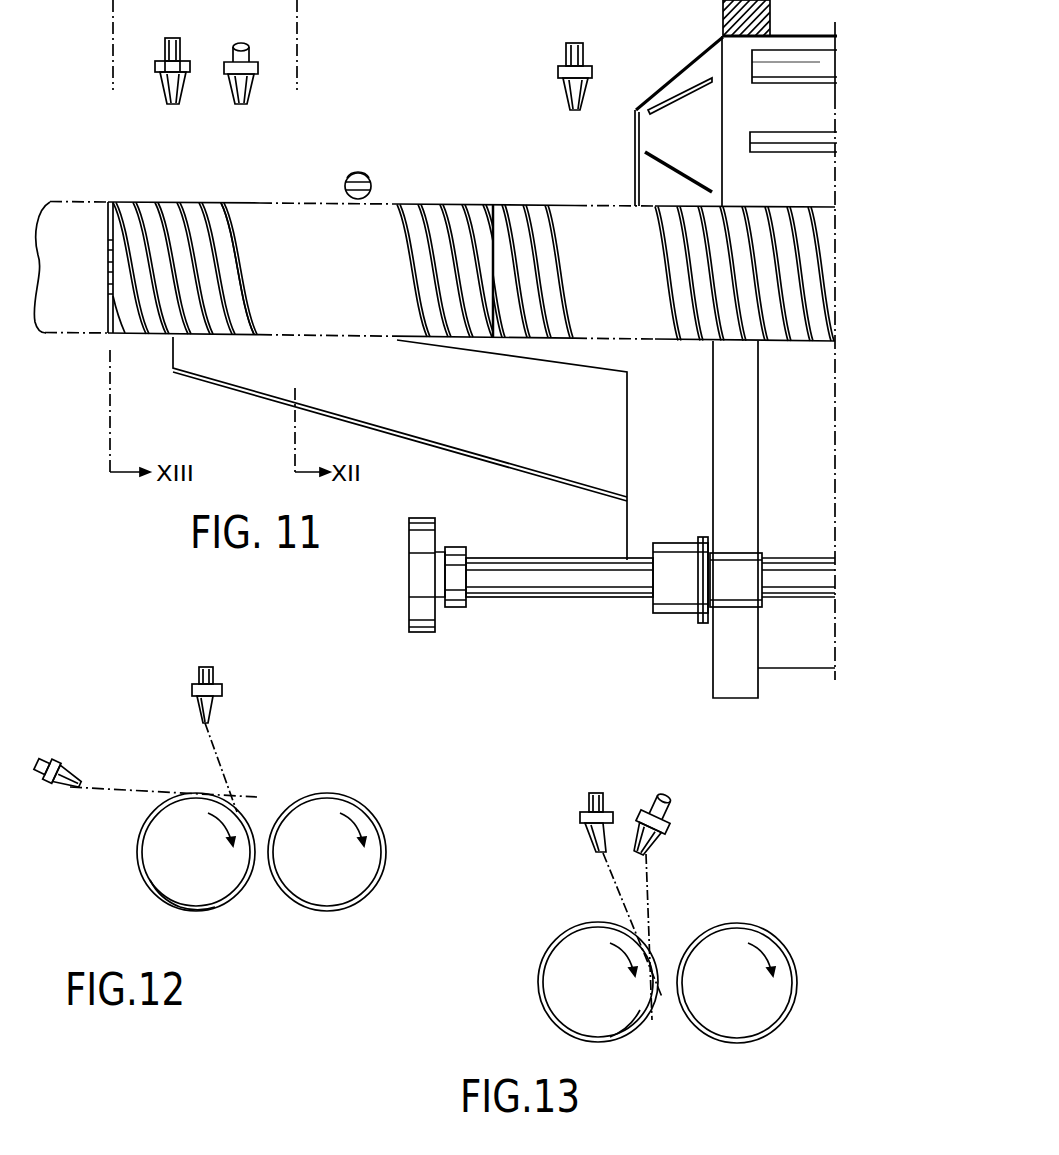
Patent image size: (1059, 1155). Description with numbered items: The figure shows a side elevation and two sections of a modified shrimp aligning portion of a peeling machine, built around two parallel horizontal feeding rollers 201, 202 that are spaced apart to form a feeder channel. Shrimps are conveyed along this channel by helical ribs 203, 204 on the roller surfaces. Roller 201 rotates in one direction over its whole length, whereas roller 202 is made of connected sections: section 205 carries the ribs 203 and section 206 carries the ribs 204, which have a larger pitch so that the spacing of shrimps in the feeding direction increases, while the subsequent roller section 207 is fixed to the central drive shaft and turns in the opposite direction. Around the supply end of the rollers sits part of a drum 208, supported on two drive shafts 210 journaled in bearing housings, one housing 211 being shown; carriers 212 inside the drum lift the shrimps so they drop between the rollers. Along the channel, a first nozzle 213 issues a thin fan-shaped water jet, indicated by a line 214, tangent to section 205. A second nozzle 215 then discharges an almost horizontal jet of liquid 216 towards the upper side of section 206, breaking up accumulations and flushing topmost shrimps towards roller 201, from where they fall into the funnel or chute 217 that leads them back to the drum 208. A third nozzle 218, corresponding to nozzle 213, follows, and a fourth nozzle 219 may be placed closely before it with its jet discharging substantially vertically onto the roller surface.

In FIG. 12, the feeding roller 201 is at (383, 798).
In FIG. 13, the feeding roller 201 is at (772, 913).
In FIG. 11, the feeding roller 202 is at (392, 360).
In FIG. 12, the feeding roller 202 is at (128, 878).
In FIG. 13, the feeding roller 202 is at (528, 1009).
In FIG. 11, the helical ribs 203 is at (527, 212).
In FIG. 11, the helical ribs 204 is at (443, 211).
In FIG. 12, the helical ribs 204 is at (242, 888).
In FIG. 13, the helical ribs 204 is at (569, 935).
In FIG. 11, the roller section 205 is at (611, 340).
In FIG. 12, the roller section 205 is at (184, 924).
In FIG. 11, the roller section 206 is at (242, 324).
In FIG. 12, the roller section 206 is at (178, 889).
In FIG. 13, the roller section 206 is at (630, 1019).
In FIG. 11, the roller section 207 is at (68, 322).
In FIG. 11, the drum 208 is at (735, 62).
In FIG. 11, the drive shaft 210 is at (597, 588).
In FIG. 11, the bearing housing 211 is at (420, 582).
In FIG. 11, the carrier 212 is at (684, 93).
In FIG. 11, the first nozzle 213 is at (570, 54).
In FIG. 12, the first nozzle 213 is at (212, 676).
In FIG. 12, the line indicating jet of water 214 is at (219, 747).
In FIG. 11, the second nozzle 215 is at (365, 172).
In FIG. 12, the second nozzle 215 is at (52, 758).
In FIG. 12, the jet of liquid 216 is at (140, 785).
In FIG. 11, the funnel or chute 217 is at (473, 436).
In FIG. 11, the third nozzle 218 is at (168, 90).
In FIG. 13, the third nozzle 218 is at (591, 802).
In FIG. 11, the fourth nozzle 219 is at (246, 98).
In FIG. 13, the fourth nozzle 219 is at (666, 812).